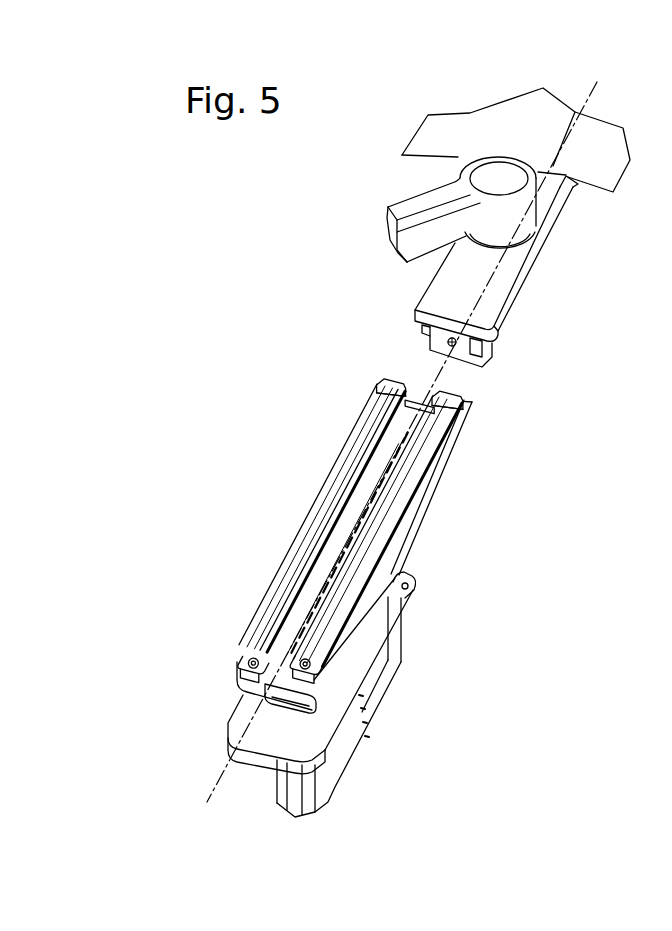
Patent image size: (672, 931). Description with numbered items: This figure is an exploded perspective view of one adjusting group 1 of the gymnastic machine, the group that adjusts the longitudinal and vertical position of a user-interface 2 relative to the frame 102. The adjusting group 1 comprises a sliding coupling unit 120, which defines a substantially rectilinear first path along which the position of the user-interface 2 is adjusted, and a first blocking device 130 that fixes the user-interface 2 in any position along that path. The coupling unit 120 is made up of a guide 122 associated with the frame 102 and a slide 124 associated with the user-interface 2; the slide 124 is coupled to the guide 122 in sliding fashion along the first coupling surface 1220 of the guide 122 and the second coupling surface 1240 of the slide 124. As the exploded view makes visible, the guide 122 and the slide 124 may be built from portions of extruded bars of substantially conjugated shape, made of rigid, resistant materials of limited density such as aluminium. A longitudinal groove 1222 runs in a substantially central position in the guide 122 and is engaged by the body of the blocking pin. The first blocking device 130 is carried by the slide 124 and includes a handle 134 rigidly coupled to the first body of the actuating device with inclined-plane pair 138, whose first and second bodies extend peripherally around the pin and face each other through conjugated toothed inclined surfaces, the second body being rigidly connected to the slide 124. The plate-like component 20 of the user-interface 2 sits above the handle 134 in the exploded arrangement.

The adjusting group 1 is at (232, 259).
The user-interface 2 is at (516, 126).
The plate of component 20 is at (492, 130).
The frame 102 is at (332, 763).
The sliding coupling unit 120 is at (466, 468).
The guide 122 is at (398, 507).
The slide 124 is at (490, 353).
The first blocking device 130 is at (535, 258).
The handle 134 is at (397, 198).
The actuating device with inclined-plane pair 138 is at (548, 282).
The first coupling surface 1220 is at (373, 423).
The longitudinal groove 1222 is at (413, 594).
The second coupling surface 1240 is at (405, 343).